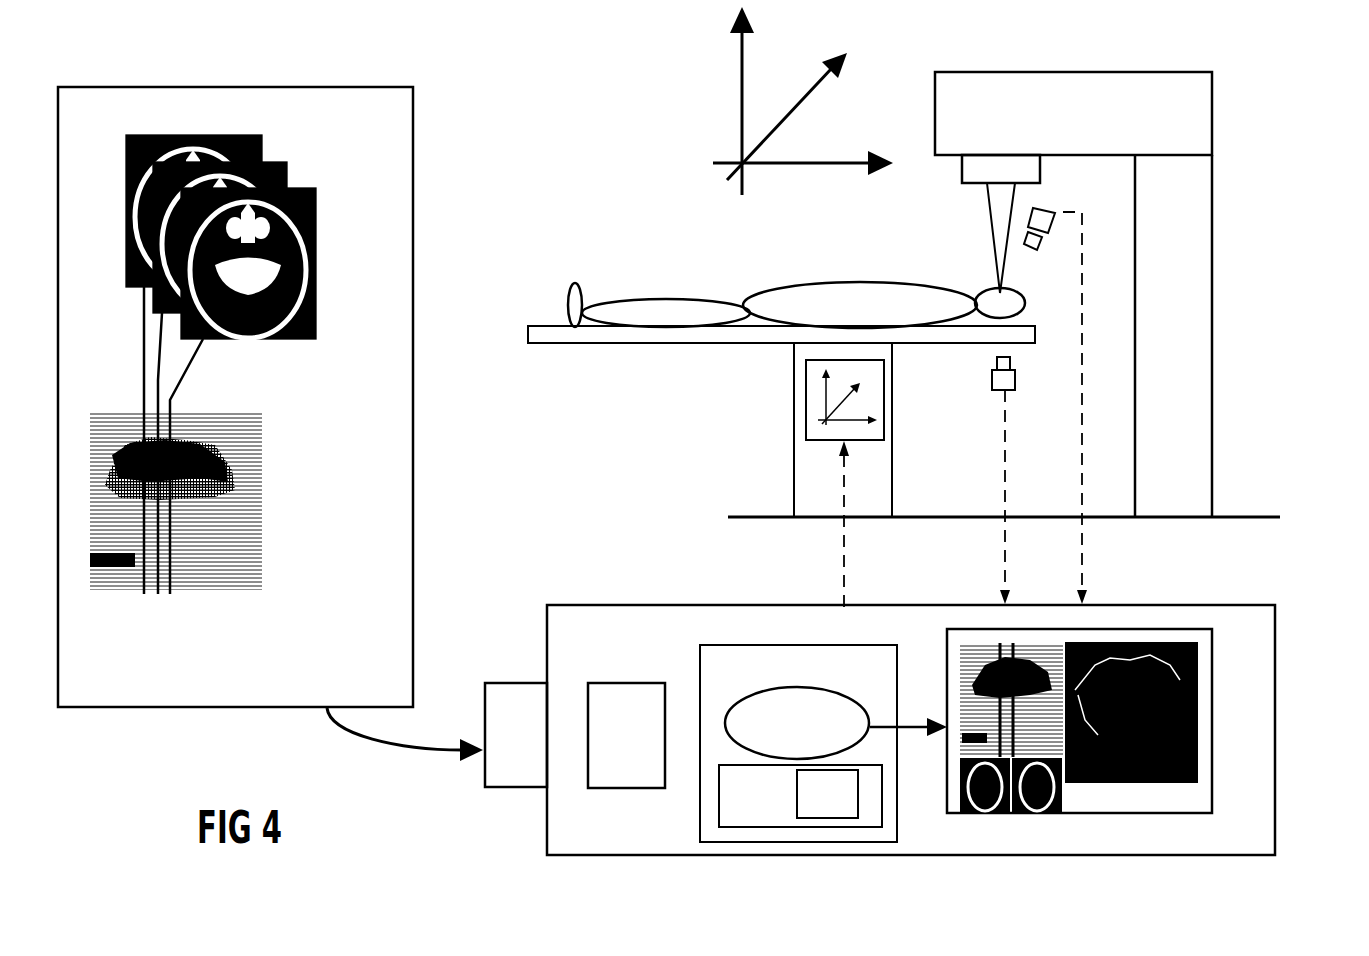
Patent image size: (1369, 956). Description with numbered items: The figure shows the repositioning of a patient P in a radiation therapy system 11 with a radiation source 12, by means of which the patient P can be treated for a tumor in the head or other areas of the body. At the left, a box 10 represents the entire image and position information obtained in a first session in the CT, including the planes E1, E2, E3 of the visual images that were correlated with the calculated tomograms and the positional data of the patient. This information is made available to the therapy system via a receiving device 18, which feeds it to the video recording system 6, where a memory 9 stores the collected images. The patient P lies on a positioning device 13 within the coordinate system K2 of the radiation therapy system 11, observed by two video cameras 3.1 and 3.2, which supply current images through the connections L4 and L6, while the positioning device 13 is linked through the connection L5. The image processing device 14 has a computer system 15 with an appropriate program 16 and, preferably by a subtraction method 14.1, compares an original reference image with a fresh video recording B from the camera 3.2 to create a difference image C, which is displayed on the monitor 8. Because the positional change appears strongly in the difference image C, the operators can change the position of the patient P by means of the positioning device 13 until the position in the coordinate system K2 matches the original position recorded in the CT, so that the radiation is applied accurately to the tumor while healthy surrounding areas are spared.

The box 10 is at (235, 435).
The plane E1 is at (144, 594).
The plane E2 is at (158, 594).
The plane E3 is at (170, 594).
The coordinate system K2 is at (796, 108).
The radiation therapy system 11 is at (1043, 294).
The radiation source 12 is at (1097, 135).
The patient P is at (857, 280).
The positioning device 13 is at (806, 393).
The video camera 3.1 is at (1045, 208).
The video camera 3.2 is at (992, 373).
The line L4 is at (1020, 497).
The line L5 is at (829, 524).
The connection L6 is at (1091, 408).
The receiving device 18 is at (531, 753).
The video recording system 6 is at (592, 607).
The memory 9 is at (635, 753).
The image processing device 14 is at (749, 685).
The current image B is at (888, 645).
The subtraction method 14.1 is at (828, 742).
The computer system 15 is at (762, 820).
The program 16 is at (844, 820).
The monitor 8 is at (1104, 738).
The difference image C is at (1198, 730).